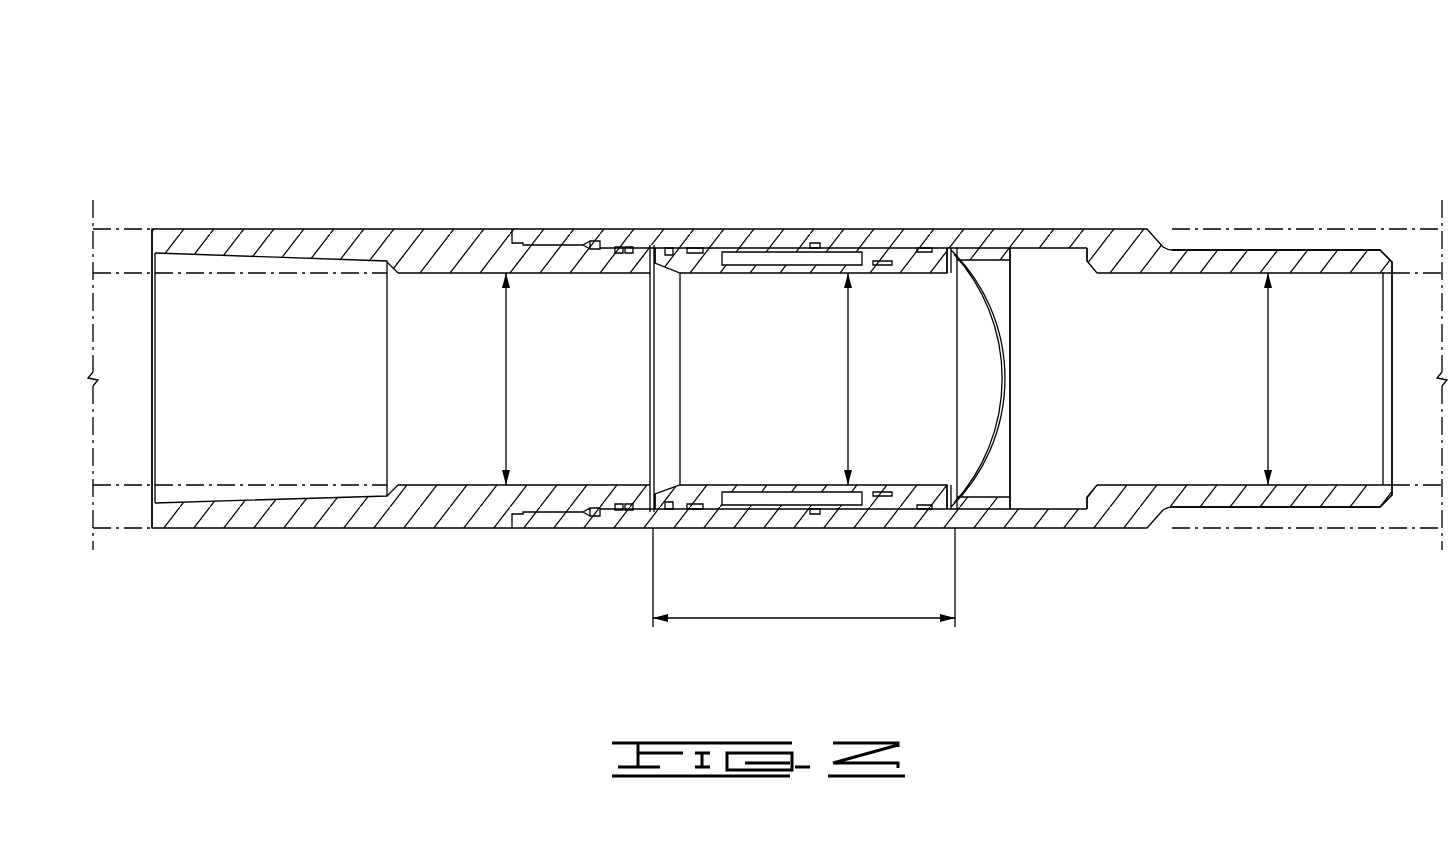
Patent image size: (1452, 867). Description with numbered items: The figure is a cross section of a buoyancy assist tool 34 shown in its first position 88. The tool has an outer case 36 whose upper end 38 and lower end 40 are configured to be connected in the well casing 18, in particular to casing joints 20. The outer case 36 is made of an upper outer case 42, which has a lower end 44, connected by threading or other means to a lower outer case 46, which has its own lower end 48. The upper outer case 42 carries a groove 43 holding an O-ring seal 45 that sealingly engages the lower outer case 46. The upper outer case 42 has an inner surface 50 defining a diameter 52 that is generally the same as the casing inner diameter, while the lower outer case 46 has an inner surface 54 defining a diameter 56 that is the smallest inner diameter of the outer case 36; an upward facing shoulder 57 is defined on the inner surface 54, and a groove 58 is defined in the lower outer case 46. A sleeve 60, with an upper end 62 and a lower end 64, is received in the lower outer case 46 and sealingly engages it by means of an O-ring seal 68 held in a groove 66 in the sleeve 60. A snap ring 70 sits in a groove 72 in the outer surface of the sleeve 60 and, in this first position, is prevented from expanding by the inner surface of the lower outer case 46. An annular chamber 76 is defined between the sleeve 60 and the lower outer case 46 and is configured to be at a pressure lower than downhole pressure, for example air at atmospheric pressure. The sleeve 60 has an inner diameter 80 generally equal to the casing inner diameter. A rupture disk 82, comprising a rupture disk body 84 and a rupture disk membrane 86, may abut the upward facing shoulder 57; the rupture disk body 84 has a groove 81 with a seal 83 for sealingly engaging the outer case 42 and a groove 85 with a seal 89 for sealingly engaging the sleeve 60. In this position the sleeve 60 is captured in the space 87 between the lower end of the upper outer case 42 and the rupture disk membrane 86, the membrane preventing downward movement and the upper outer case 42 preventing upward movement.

The well casing 18 is at (767, 337).
The casing joints 20 is at (120, 229).
The buoyancy assist tool 34 is at (595, 73).
The first position 88 is at (660, 102).
The outer case 36 is at (772, 319).
The lower outer case 46 is at (785, 229).
The upper end 38 is at (170, 528).
The lower end 40 is at (1282, 336).
The lower end 48 is at (1285, 250).
The upper outer case 42 is at (255, 240).
The groove 43 is at (568, 346).
The O-ring seal 45 is at (625, 245).
The lower end 44 is at (648, 245).
The inner surface 50 is at (471, 273).
The diameter 52 is at (504, 388).
The inner surface 54 is at (1076, 270).
The diameter 56 is at (1266, 388).
The upward facing shoulder 57 is at (1020, 253).
The groove 58 is at (815, 243).
The sleeve 60 is at (782, 500).
The upper end 62 is at (643, 510).
The lower end 64 is at (948, 505).
The groove 66 is at (668, 342).
The O-ring seal 68 is at (700, 247).
The snap ring 70 is at (714, 422).
The groove 72 is at (668, 505).
The annular chamber 76 is at (757, 247).
The diameter 80 is at (846, 348).
The groove 81 is at (967, 342).
The seal 83 is at (925, 248).
The rupture disk body 84 is at (892, 262).
The rupture disk 82 is at (1031, 420).
The rupture disk membrane 86 is at (987, 462).
The groove 85 is at (907, 421).
The seal 89 is at (883, 505).
The space 87 is at (865, 619).